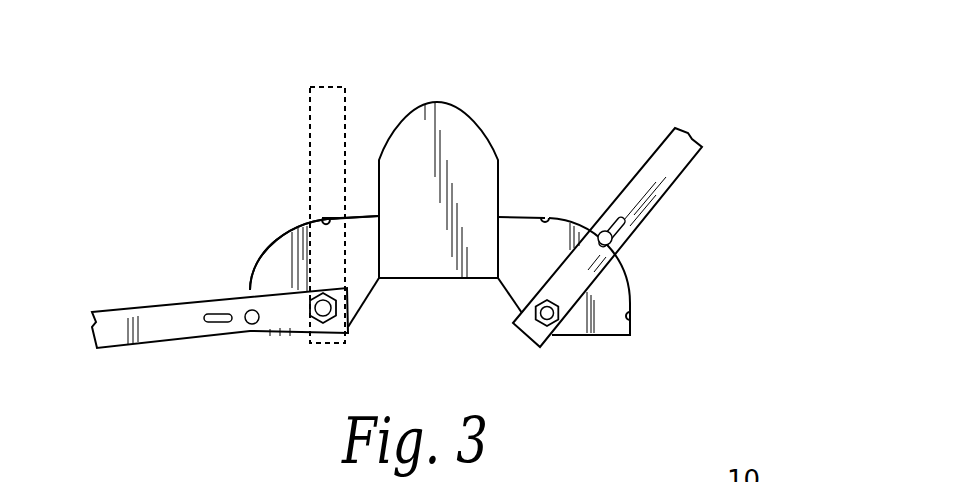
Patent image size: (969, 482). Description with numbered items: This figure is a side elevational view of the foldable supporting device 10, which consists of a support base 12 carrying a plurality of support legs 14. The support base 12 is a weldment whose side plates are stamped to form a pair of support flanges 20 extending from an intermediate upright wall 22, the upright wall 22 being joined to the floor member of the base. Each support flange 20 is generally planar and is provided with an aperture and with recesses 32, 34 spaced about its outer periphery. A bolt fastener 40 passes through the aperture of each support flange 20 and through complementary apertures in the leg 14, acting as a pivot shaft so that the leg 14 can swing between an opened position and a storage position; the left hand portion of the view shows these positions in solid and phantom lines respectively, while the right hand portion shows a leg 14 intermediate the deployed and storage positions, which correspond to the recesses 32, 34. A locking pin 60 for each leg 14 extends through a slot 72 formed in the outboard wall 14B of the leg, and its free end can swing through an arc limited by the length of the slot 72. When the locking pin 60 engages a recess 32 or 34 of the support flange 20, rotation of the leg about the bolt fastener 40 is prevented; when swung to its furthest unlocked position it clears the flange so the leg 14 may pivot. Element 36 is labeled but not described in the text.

The foldable supporting device 10 is at (697, 124).
The support base 12 is at (468, 99).
The support leg 14 is at (437, 283).
The outboard wall of leg 14B is at (108, 342).
The support flange 20 is at (363, 277).
The intermediate upright wall 22 is at (428, 231).
The recess 32 is at (634, 316).
The recess 34 is at (545, 215).
The curved edge portion 36 is at (267, 243).
The bolt fastener 40 is at (553, 321).
The locking pin 60 is at (252, 324).
The slot 72 is at (215, 313).